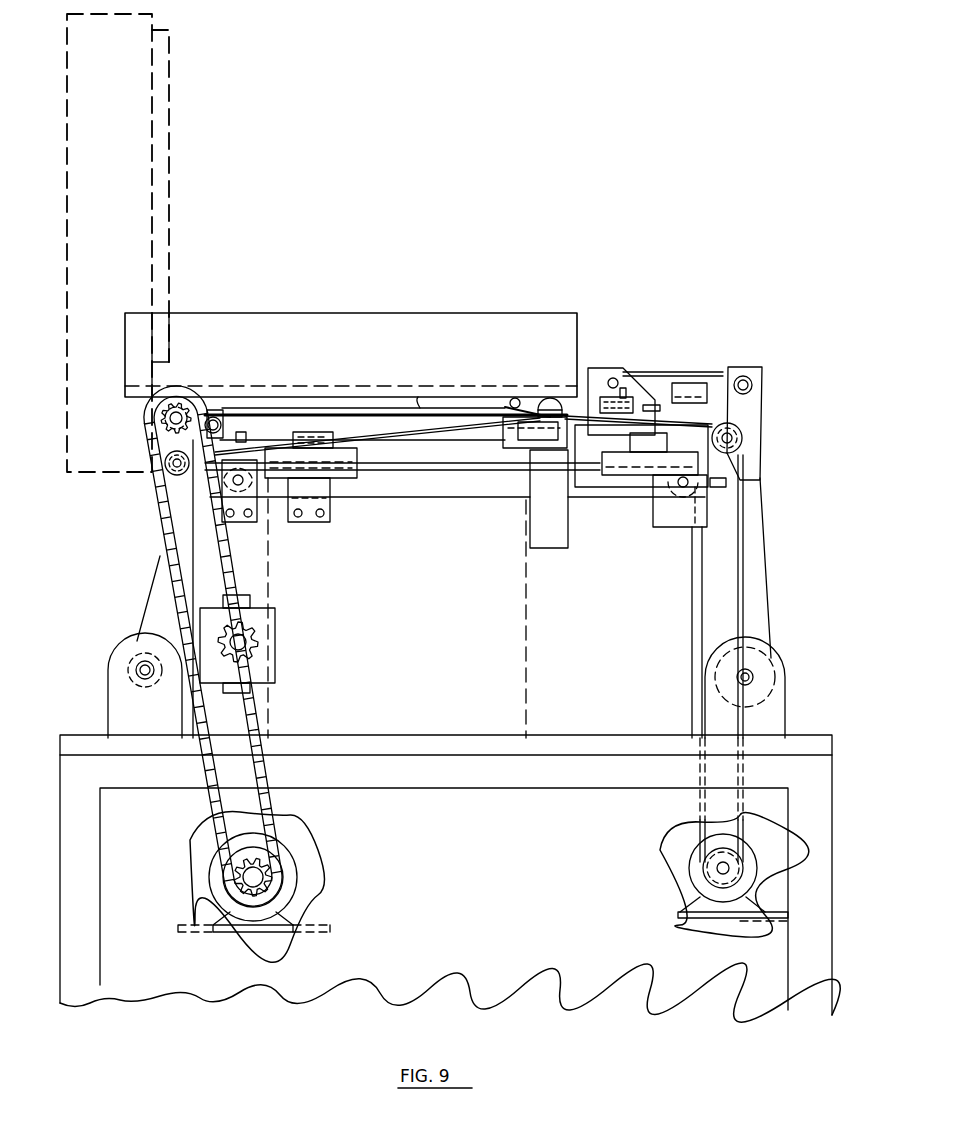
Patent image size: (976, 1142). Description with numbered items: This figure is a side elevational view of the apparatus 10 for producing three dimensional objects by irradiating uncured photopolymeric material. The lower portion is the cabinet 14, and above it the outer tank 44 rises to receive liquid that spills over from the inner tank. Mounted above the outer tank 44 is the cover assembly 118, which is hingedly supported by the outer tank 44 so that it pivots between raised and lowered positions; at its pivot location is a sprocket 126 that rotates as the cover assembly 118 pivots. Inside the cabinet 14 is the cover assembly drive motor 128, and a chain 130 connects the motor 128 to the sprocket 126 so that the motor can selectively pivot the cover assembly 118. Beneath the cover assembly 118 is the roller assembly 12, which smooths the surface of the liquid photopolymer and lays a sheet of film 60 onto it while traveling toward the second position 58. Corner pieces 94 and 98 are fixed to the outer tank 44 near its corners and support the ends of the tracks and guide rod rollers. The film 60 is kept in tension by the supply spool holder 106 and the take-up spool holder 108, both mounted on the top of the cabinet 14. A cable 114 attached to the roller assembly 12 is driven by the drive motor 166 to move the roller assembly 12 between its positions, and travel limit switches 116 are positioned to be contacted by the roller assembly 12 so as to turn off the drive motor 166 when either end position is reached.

The apparatus 10 is at (808, 622).
The roller assembly 12 is at (623, 368).
The cabinet 14 is at (78, 942).
The outer tank 44 is at (376, 698).
The second position 58 is at (603, 368).
The sheet of film 60 is at (420, 408).
The corner piece 94 is at (764, 385).
The corner piece 98 is at (222, 412).
The supply spool holder 106 is at (795, 705).
The take-up spool holder 108 is at (106, 713).
The cable 114 is at (425, 438).
The travel limit switches 116 is at (320, 432).
The cover assembly 118 is at (452, 312).
The sprocket 126 is at (162, 423).
The cover assembly drive motor 128 is at (290, 866).
The chain 130 is at (152, 488).
The drive motor 166 is at (690, 876).